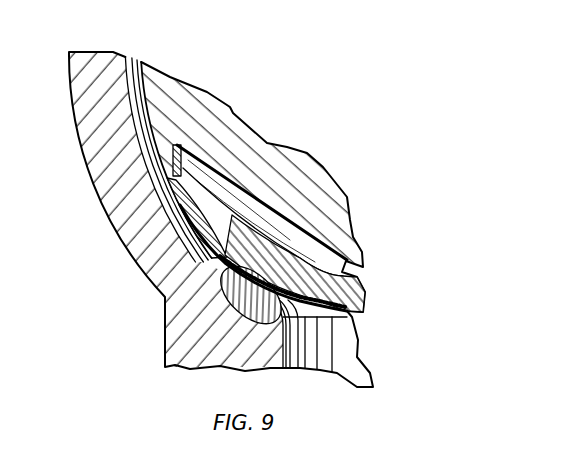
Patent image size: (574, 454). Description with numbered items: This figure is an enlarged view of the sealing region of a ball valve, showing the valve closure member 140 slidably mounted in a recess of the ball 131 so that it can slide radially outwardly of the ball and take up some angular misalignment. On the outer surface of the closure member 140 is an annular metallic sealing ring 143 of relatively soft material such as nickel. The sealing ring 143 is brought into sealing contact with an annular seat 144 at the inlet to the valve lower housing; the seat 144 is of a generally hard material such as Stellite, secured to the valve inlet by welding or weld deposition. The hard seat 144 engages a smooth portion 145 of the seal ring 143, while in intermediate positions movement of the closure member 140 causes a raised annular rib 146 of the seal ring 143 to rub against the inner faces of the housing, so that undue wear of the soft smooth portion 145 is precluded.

The ball 131 is at (360, 224).
The valve closure member 140 is at (363, 309).
The annular metallic sealing ring 143 is at (214, 246).
The seat 144 is at (224, 291).
The smooth portion of the seal ring 145 is at (222, 268).
The raised annular rib 146 is at (212, 243).